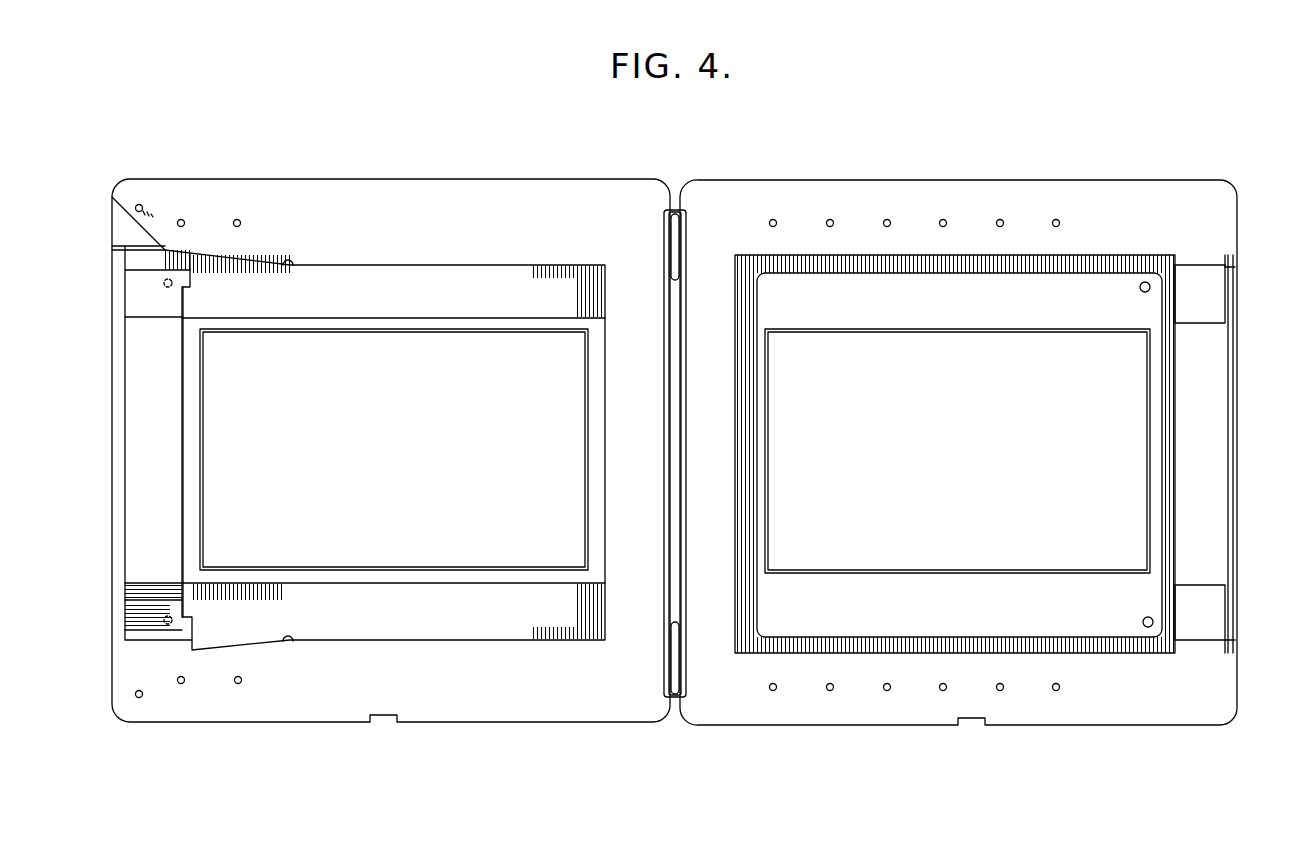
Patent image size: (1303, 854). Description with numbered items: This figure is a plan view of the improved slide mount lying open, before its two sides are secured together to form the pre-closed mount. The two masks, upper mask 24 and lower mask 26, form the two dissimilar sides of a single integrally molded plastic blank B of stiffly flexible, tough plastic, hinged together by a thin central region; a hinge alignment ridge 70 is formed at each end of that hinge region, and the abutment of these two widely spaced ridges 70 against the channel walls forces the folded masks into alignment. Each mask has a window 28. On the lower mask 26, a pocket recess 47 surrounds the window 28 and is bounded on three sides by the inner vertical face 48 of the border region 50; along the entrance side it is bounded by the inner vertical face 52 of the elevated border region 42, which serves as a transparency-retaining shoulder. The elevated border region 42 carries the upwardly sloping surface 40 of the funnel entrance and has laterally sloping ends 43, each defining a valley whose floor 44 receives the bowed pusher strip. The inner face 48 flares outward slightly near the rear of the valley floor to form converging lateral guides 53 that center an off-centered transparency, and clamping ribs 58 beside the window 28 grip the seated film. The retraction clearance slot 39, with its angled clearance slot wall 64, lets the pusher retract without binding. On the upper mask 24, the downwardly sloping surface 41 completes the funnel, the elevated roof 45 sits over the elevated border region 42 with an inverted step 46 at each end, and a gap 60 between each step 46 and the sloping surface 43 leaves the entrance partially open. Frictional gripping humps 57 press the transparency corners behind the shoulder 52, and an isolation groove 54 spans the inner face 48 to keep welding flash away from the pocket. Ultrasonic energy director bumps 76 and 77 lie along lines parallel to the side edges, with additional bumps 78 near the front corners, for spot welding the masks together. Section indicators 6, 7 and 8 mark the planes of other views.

The upper mask 24 is at (1145, 180).
The lower mask 26 is at (270, 180).
The window 28 is at (418, 443).
The retraction clearance slot 39 is at (128, 236).
The upwardly sloping surface 40 is at (116, 543).
The downwardly sloping surface 41 is at (1238, 420).
The elevated border region 42 is at (165, 457).
The laterally sloping end 43 is at (137, 293).
The valley floor 44 is at (137, 262).
The elevated roof 45 is at (1213, 447).
The inverted step 46 is at (1225, 318).
The pocket recess 47 is at (418, 307).
The inner vertical face 48 is at (562, 268).
The border region 50 is at (538, 196).
The inner vertical face of the elevated border region 52 is at (185, 478).
The converging lateral guide 53 is at (290, 260).
The isolation groove 54 is at (1080, 268).
The frictional gripping hump 57 is at (175, 286).
The clamping rib 58 is at (512, 330).
The gap 60 is at (675, 305).
The angled clearance slot wall 64 is at (125, 216).
The hinge alignment ridge 70 is at (668, 242).
The ultrasonic energy director bump 76 is at (1054, 219).
The ultrasonic energy director bump 77 is at (236, 219).
The additional bump 78 is at (140, 204).
The section line 6 is at (60, 470).
The section line 7 is at (62, 642).
The section line 8 is at (424, 122).
The integrally molded plastic blank B is at (938, 158).